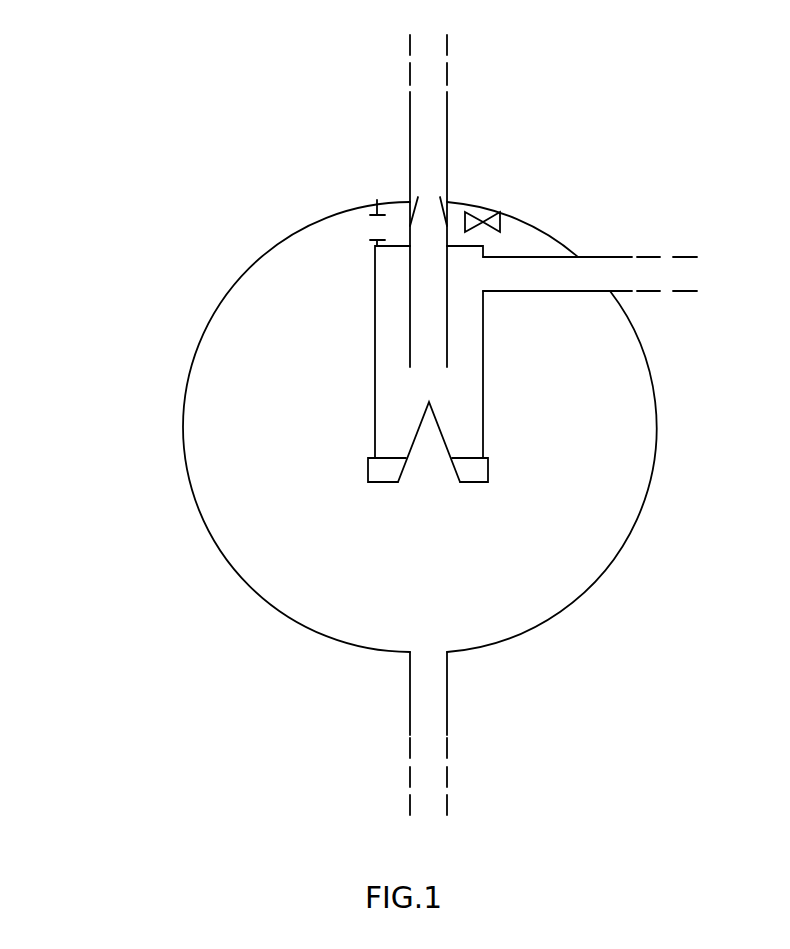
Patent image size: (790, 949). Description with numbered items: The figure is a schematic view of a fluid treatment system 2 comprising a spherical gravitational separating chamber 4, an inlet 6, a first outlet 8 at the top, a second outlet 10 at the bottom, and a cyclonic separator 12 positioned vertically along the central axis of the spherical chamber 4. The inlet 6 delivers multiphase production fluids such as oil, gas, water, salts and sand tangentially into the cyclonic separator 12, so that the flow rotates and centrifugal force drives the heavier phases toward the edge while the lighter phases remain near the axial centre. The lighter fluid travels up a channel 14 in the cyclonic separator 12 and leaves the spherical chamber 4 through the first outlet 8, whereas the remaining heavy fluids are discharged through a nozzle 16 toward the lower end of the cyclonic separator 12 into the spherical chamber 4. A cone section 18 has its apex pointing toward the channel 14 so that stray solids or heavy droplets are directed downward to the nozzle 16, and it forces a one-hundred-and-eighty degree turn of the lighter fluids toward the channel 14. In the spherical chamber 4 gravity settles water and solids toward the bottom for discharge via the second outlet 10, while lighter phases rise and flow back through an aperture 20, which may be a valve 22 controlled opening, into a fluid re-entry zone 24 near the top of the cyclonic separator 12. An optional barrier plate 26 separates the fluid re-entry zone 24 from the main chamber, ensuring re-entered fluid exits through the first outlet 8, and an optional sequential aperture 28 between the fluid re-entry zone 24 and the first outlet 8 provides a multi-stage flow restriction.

The fluid treatment system 2 is at (110, 516).
The spherical gravitational separating chamber 4 is at (277, 562).
The inlet 6 is at (555, 255).
The first outlet 8 is at (447, 133).
The second outlet 10 is at (447, 683).
The cyclonic separator 12 is at (483, 347).
The channel 14 is at (447, 353).
The nozzle 16 is at (472, 470).
The cone section 18 is at (415, 432).
The aperture 20 is at (375, 229).
The valve 22 is at (483, 222).
The fluid re-entry zone 24 is at (380, 204).
The barrier plate 26 is at (402, 243).
The sequential aperture 28 is at (447, 182).